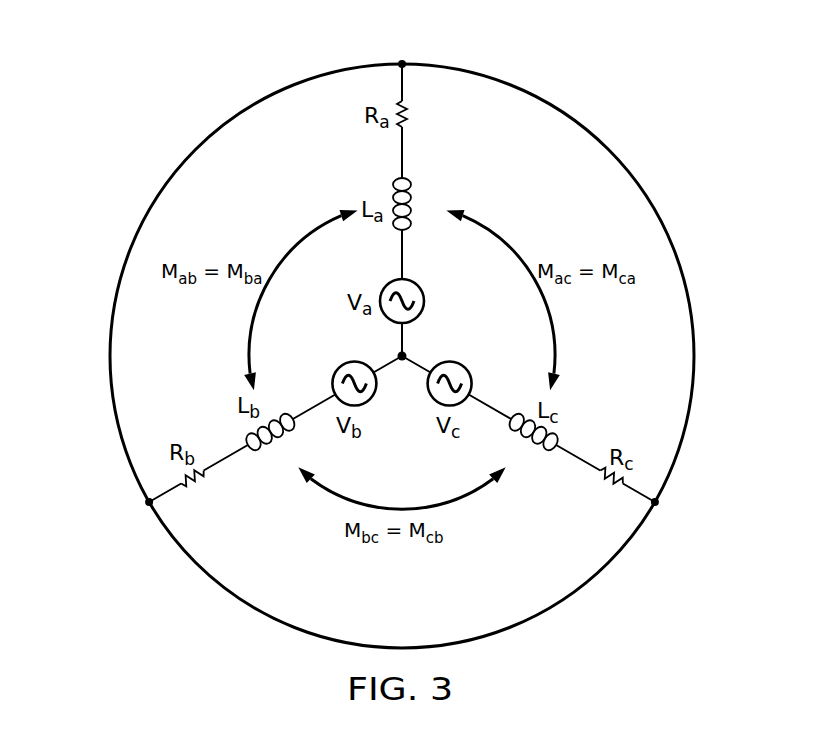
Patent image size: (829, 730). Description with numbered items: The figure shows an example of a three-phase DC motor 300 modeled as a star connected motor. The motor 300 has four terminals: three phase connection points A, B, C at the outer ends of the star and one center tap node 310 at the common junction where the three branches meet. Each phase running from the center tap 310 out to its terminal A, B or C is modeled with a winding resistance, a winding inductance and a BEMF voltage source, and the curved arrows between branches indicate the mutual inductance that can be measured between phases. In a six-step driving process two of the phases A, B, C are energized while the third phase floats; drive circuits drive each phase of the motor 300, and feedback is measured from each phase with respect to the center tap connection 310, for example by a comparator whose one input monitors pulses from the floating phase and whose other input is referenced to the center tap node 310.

The three-phase DC motor 300 is at (241, 70).
The center tap 310 is at (425, 349).
The phase A connection point A is at (401, 53).
The phase B connection point B is at (140, 510).
The phase C connection point C is at (663, 510).